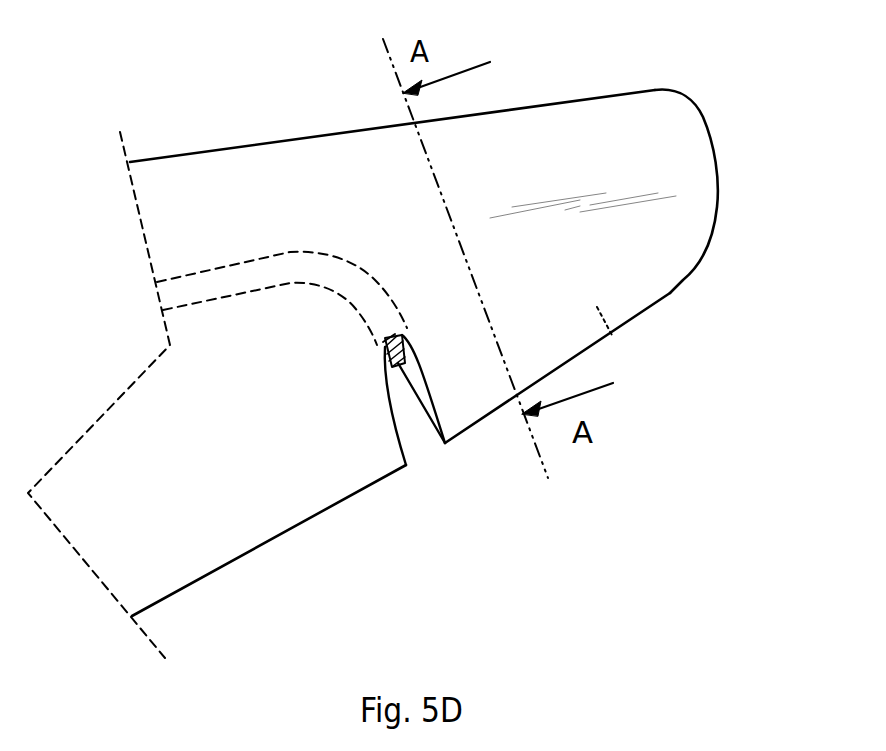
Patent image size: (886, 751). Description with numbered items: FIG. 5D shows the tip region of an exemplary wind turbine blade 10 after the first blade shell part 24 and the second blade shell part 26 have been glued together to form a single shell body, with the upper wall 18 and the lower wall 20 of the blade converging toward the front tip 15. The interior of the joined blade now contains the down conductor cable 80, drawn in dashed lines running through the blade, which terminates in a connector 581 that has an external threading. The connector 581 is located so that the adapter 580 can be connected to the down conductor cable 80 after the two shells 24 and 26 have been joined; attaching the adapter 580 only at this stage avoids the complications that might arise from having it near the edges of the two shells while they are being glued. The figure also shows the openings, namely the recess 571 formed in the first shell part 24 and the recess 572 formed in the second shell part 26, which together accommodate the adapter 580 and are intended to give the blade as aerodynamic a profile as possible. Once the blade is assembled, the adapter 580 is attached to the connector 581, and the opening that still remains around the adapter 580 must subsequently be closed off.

The styling device 10 is at (168, 109).
The upper wall 18 is at (284, 138).
The lower wall 20 is at (262, 546).
The front tip 15 is at (703, 112).
The down conductor cable 80 is at (250, 280).
The adapter 580 is at (422, 452).
The recess 571 is at (428, 398).
The recess 572 is at (390, 417).
The connector 581 is at (407, 350).
The second blade shell part 26 is at (643, 283).
The first blade shell part 24 is at (613, 337).